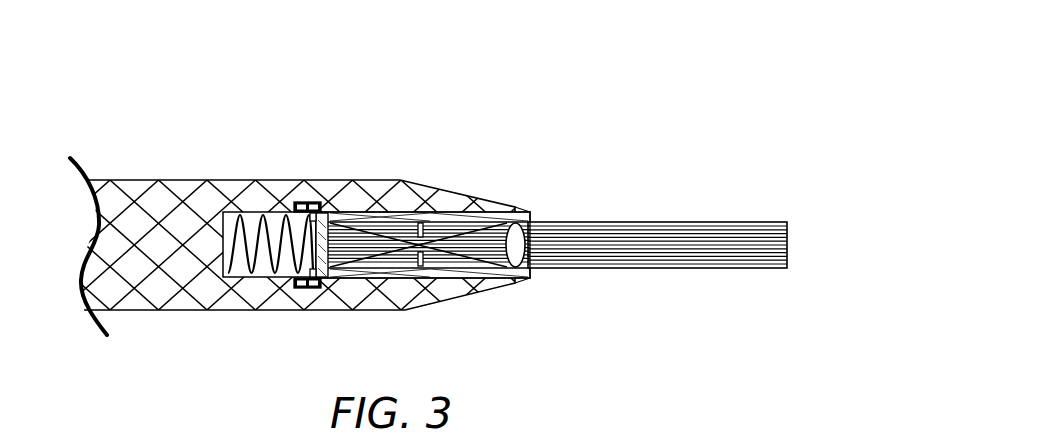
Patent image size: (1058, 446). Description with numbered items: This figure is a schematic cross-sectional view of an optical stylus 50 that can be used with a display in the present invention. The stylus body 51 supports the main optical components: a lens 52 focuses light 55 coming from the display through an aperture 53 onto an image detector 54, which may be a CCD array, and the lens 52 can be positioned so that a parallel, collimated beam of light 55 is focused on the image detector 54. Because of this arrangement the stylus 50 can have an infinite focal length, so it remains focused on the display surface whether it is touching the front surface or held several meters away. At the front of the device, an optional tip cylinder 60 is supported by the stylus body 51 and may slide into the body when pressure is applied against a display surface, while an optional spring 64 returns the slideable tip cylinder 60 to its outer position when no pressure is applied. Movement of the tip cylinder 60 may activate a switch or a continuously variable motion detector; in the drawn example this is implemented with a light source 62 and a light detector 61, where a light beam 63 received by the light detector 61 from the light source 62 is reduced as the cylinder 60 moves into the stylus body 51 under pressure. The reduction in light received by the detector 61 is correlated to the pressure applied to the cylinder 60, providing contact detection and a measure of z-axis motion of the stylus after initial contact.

The optical stylus 50 is at (516, 128).
The stylus body 51 is at (115, 200).
The lens 52 is at (518, 252).
The aperture 53 is at (430, 247).
The image detector 54 is at (330, 223).
The light 55 is at (680, 233).
The tip cylinder 60 is at (519, 212).
The light detector 61 is at (308, 202).
The light source 62 is at (307, 288).
The light beam 63 is at (305, 273).
The spring 64 is at (233, 237).